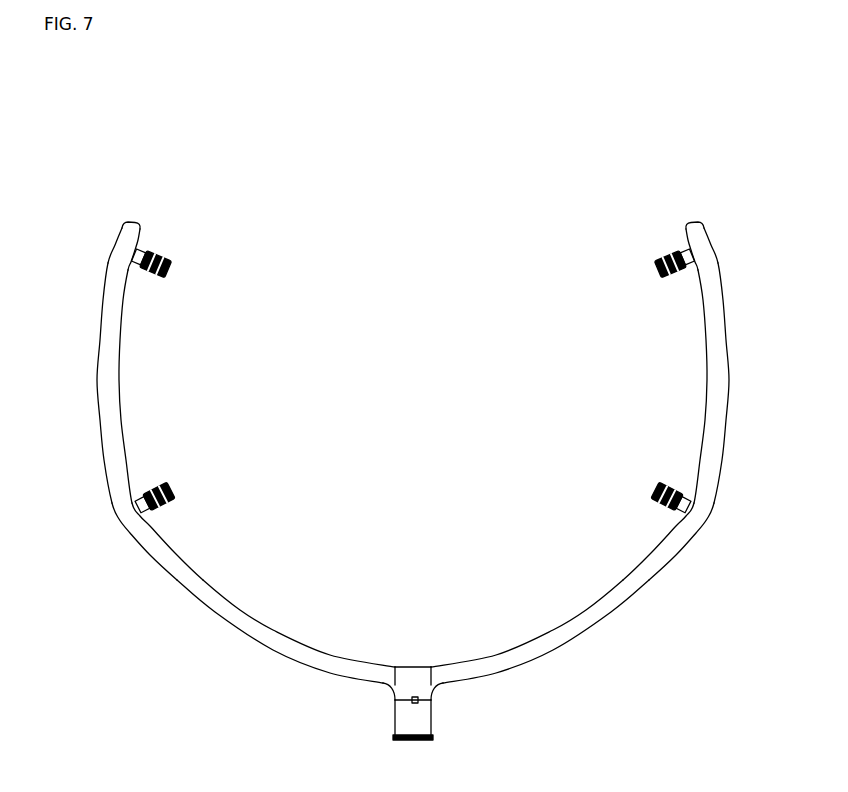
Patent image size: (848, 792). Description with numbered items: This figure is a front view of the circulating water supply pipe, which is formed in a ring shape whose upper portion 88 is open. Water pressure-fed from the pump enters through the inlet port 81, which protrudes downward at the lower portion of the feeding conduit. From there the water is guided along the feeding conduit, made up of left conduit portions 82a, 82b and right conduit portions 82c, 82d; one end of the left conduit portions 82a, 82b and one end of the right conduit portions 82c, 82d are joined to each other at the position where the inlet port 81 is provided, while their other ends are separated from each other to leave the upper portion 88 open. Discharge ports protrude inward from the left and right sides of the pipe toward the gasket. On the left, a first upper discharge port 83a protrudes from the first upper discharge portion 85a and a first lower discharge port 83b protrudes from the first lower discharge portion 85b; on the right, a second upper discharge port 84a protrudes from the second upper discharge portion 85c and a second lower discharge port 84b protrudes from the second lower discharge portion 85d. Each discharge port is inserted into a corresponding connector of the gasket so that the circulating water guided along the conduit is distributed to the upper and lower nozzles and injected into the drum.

The inlet port 81 is at (416, 723).
The left conduit portion 82a is at (119, 383).
The left conduit portion 82b is at (273, 630).
The right conduit portion 82c is at (729, 335).
The right conduit portion 82d is at (580, 637).
The first upper discharge port 83a is at (160, 249).
The first lower discharge port 83b is at (172, 486).
The second upper discharge port 84a is at (661, 250).
The second lower discharge port 84b is at (657, 483).
The first upper discharge portion 85a is at (121, 241).
The first lower discharge portion 85b is at (137, 511).
The second upper discharge portion 85c is at (703, 243).
The second lower discharge portion 85d is at (697, 513).
The upper portion 88 is at (391, 309).